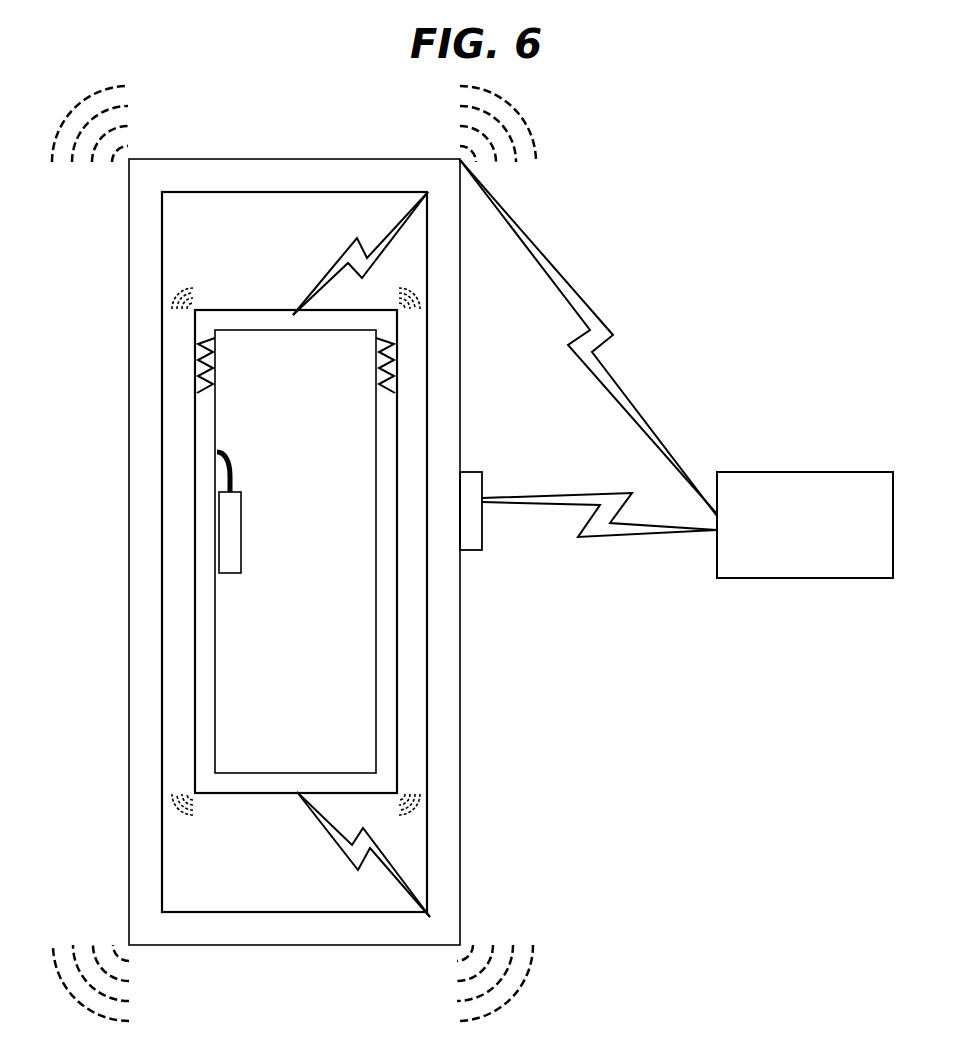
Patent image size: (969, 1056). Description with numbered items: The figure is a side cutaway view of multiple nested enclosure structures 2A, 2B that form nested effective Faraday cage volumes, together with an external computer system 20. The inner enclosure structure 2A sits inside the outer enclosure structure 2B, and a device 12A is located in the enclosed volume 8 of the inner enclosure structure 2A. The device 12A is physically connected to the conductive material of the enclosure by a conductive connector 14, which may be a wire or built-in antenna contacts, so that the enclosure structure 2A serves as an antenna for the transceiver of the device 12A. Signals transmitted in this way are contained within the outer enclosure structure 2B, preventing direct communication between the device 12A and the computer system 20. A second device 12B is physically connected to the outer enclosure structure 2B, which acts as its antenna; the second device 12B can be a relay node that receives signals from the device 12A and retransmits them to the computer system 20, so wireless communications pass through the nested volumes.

The outer enclosure structure 2B is at (300, 160).
The enclosure structure 2A is at (278, 312).
The enclosed volume 8 is at (295, 551).
The conductive connector 14 is at (231, 473).
The device 12A is at (232, 530).
The second device 12B is at (473, 527).
The computer system 20 is at (805, 525).